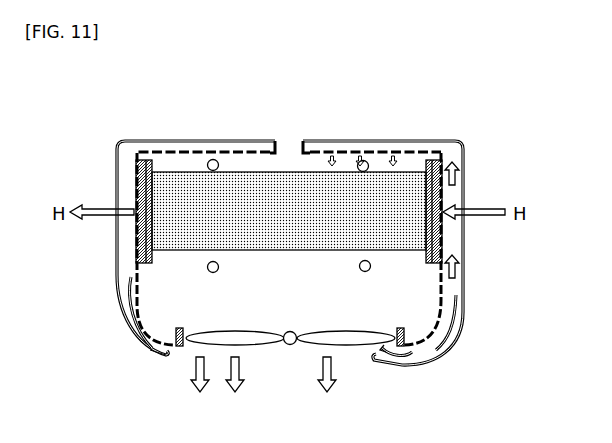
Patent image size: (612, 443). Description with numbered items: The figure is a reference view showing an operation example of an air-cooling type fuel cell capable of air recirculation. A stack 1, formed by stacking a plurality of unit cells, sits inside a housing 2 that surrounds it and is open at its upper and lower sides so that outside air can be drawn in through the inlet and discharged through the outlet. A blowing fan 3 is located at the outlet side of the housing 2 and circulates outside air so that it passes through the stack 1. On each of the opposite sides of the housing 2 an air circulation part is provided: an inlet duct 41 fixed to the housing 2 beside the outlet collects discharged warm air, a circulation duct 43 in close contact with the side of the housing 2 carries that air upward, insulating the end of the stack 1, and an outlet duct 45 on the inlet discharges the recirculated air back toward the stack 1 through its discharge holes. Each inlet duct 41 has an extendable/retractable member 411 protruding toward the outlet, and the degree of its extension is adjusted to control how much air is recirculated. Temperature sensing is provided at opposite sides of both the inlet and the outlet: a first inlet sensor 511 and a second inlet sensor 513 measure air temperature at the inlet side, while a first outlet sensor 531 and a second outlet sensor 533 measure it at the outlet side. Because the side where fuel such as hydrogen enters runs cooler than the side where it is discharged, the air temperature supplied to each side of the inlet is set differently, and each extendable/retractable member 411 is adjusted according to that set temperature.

The stack 1 is at (290, 190).
The housing 2 is at (463, 190).
The blowing fan 3 is at (258, 345).
The inlet duct 41 is at (116, 290).
The circulation duct 43 is at (115, 252).
The outlet duct 45 is at (228, 141).
The extendable/retractable member 411 is at (150, 358).
The first inlet sensor 511 is at (211, 159).
The second inlet sensor 513 is at (357, 162).
The first outlet sensor 531 is at (217, 272).
The second outlet sensor 533 is at (359, 266).